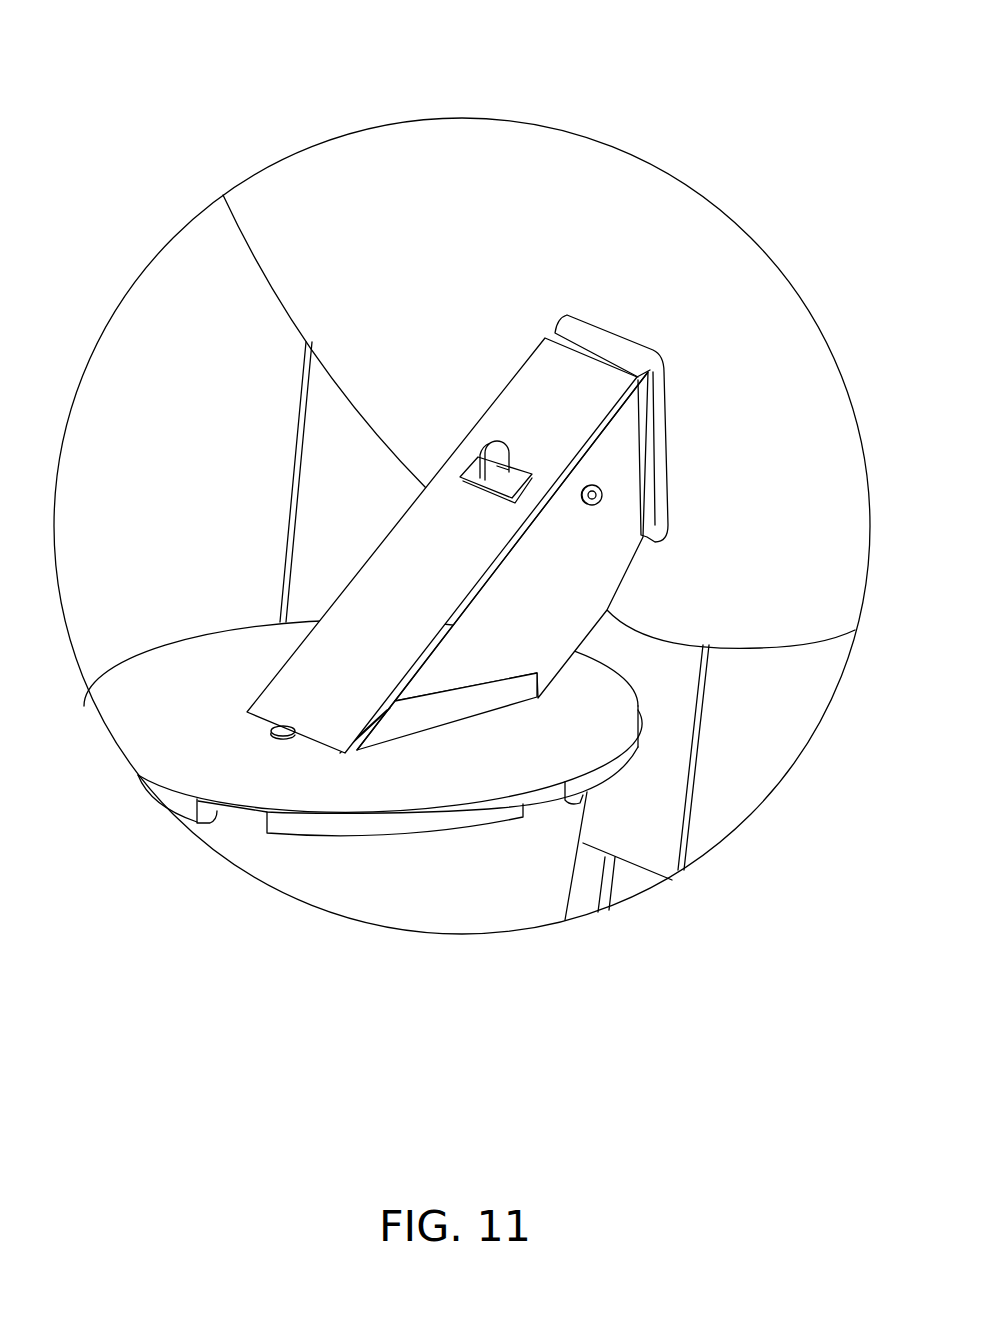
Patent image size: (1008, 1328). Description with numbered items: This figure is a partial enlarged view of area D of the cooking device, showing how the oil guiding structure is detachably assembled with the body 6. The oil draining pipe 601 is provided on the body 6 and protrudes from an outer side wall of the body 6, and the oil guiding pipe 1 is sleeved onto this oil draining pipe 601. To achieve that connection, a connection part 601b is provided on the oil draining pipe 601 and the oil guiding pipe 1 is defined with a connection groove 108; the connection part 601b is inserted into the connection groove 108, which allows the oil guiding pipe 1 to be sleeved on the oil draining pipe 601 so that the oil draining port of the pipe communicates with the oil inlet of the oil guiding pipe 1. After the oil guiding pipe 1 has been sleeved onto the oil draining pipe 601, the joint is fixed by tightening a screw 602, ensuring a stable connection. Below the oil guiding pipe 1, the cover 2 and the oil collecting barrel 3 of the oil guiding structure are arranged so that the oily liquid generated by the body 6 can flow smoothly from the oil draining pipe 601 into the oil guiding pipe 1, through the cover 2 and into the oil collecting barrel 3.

The area D is at (462, 118).
The oil guiding pipe 1 is at (403, 558).
The cover 2 is at (170, 680).
The oil collecting barrel 3 is at (400, 880).
The body 6 is at (718, 292).
The connection groove 108 is at (458, 458).
The oil draining pipe 601 is at (587, 337).
The connection part 601b is at (506, 472).
The screw 602 is at (603, 490).